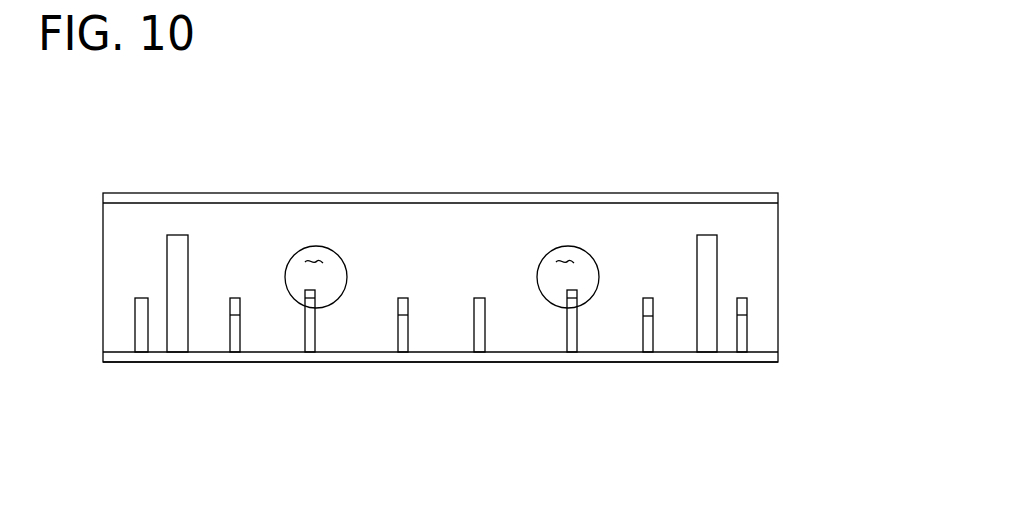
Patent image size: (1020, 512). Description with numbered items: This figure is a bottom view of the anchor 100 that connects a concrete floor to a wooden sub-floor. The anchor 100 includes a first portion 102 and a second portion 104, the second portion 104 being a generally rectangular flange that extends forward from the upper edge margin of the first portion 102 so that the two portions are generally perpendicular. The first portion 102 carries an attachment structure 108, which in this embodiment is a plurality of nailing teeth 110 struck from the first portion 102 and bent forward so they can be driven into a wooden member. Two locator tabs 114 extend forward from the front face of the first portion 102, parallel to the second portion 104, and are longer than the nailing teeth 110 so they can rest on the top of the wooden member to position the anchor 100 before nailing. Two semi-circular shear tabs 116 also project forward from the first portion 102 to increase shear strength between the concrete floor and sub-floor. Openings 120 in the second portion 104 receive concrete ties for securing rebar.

The anchor 100 is at (797, 157).
The first portion 102 is at (548, 362).
The second portion 104 is at (447, 240).
The attachment structure 108 is at (342, 368).
The nailing teeth 110 is at (403, 298).
The locator tab 114 is at (172, 248).
The shear tab 116 is at (310, 290).
The opening 120 is at (320, 255).